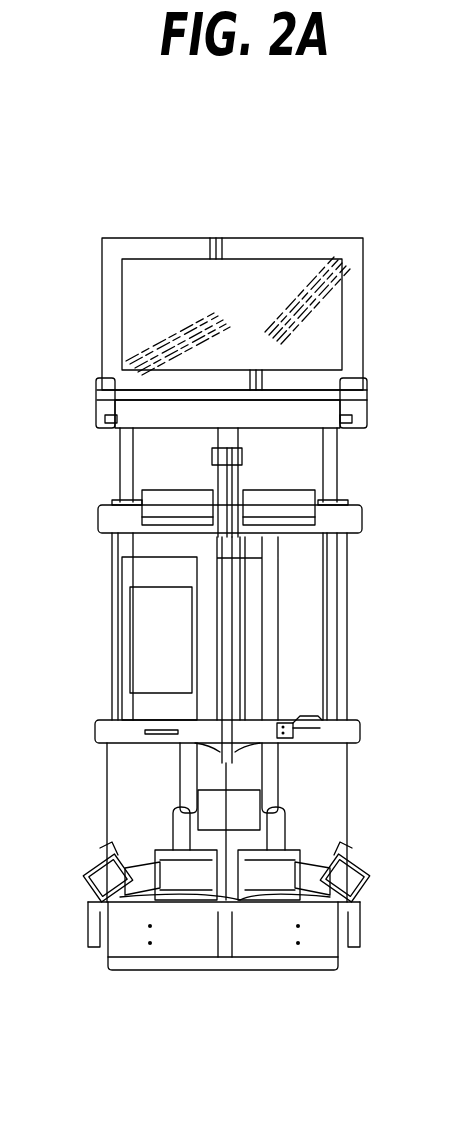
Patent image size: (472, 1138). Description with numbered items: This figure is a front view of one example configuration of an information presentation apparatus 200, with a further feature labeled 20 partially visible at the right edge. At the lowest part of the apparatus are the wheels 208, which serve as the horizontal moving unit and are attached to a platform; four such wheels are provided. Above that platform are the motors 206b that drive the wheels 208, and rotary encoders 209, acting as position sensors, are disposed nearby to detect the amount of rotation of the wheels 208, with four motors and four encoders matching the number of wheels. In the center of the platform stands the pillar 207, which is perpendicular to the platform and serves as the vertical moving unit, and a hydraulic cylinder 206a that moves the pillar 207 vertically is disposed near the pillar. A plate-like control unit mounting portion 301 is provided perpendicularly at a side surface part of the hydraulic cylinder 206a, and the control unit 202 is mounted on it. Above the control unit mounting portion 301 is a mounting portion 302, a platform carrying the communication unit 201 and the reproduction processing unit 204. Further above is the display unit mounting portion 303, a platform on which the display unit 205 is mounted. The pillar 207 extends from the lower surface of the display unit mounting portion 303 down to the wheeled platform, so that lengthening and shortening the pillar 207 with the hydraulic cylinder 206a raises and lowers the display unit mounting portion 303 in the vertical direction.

The information presentation apparatus 200 is at (140, 211).
The display unit 205 is at (363, 272).
The display unit mounting portion 303 is at (353, 413).
The pillar 207 is at (232, 480).
The communication unit 201 is at (163, 496).
The reproduction processing unit 204 is at (300, 497).
The mounting portion 302 is at (352, 520).
The control unit mounting portion 301 is at (138, 567).
The control unit 202 is at (128, 647).
The hydraulic cylinder 206a is at (245, 803).
The motors 206b is at (297, 882).
The wheels 208 is at (317, 907).
The rotary encoders 209 is at (315, 862).
The robot component 20 is at (457, 867).